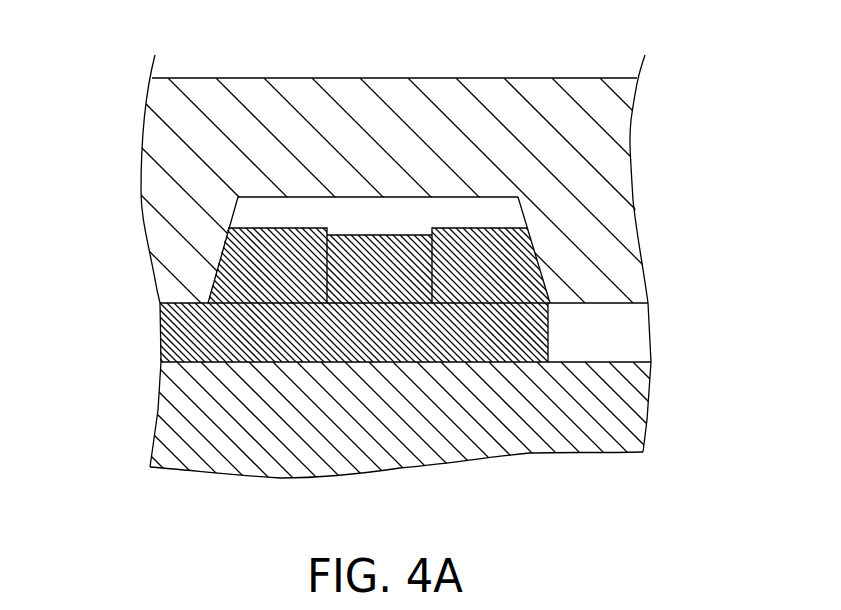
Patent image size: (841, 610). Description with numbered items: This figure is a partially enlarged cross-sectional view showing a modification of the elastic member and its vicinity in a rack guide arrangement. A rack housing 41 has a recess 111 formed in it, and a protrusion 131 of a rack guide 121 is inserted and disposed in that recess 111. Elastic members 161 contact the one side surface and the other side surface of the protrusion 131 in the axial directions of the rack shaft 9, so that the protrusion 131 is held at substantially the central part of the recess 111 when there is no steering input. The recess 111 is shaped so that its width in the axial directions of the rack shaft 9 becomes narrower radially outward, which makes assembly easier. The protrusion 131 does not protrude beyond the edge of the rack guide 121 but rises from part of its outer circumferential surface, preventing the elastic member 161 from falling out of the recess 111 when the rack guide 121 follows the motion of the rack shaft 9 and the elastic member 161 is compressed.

The rack housing 41 is at (618, 172).
The rack shaft 9 is at (620, 403).
The rack guide 121 is at (177, 340).
The elastic member 161 is at (285, 240).
The protrusion 131 is at (377, 260).
The recess 111 is at (262, 198).